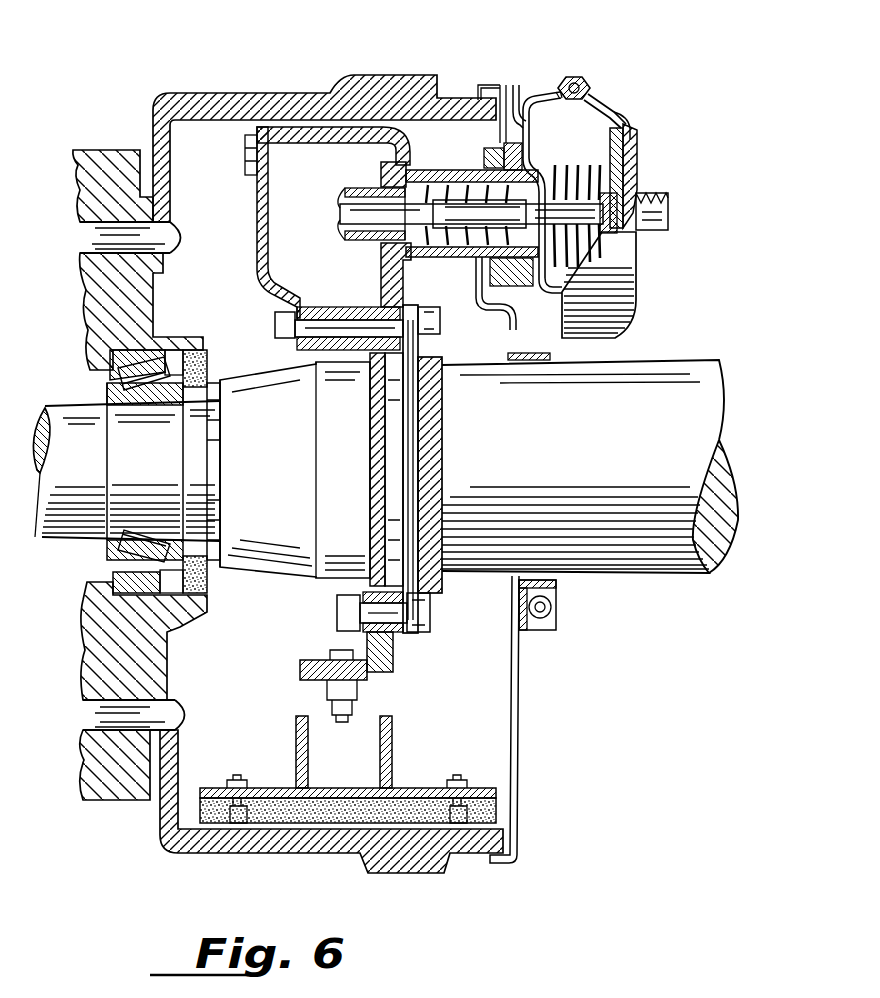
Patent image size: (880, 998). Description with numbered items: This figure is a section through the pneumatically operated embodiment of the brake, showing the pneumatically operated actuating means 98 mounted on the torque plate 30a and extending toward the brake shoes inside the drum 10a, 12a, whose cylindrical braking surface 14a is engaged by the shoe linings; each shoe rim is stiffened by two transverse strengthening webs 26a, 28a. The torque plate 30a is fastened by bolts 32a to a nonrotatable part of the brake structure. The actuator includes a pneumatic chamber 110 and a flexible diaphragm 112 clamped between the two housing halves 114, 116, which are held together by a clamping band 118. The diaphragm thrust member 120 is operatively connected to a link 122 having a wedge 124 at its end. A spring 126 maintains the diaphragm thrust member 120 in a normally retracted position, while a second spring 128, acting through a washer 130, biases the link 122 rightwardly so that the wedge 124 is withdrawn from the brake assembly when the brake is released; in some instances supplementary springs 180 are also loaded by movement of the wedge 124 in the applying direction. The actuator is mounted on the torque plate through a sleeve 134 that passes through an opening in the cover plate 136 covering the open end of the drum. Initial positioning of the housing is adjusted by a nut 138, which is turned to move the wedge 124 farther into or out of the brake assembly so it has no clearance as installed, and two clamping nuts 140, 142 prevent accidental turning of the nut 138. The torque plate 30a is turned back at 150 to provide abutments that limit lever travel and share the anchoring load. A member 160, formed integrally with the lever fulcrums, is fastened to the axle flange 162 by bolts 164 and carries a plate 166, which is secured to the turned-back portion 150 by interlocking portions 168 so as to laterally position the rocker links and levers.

The brake drum 10a is at (340, 79).
The brake drum 12a is at (200, 846).
The cylindrical braking surface 14a is at (270, 834).
The transverse strengthening web 26a is at (300, 741).
The transverse strengthening web 28a is at (392, 745).
The torque plate 30a is at (388, 644).
The bolts 32a is at (428, 611).
The pneumatically operated actuating means 98 is at (615, 97).
The pneumatic chamber 110 is at (631, 186).
The flexible diaphragm 112 is at (622, 117).
The housing half 114 is at (592, 101).
The housing half 116 is at (525, 105).
The clamping band 118 is at (577, 76).
The diaphragm thrust member 120 is at (632, 136).
The link 122 is at (596, 250).
The wedge 124 is at (366, 218).
The spring 126 is at (577, 188).
The spring 128 is at (453, 193).
The washer 130 is at (525, 232).
The sleeve 134 is at (382, 170).
The cover plate 136 is at (497, 290).
The nut 138 is at (543, 147).
The clamping nut 140 is at (476, 140).
The clamping nut 142 is at (490, 163).
The turned-back portion of torque plate 150 is at (290, 135).
The member 160 is at (351, 350).
The axle flange 162 is at (408, 411).
The bolts 164 is at (318, 333).
The plate 166 is at (265, 274).
The interlocking portions 168 is at (245, 158).
The supplementary springs 180 is at (355, 186).